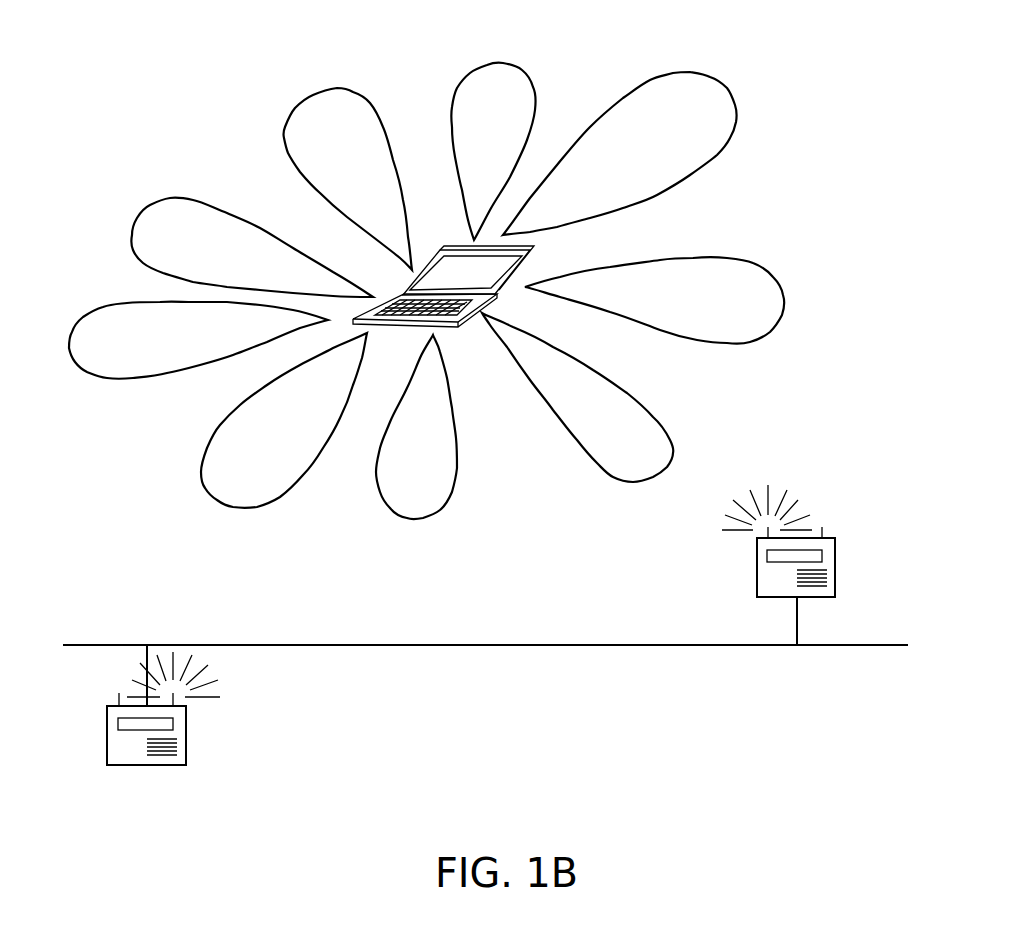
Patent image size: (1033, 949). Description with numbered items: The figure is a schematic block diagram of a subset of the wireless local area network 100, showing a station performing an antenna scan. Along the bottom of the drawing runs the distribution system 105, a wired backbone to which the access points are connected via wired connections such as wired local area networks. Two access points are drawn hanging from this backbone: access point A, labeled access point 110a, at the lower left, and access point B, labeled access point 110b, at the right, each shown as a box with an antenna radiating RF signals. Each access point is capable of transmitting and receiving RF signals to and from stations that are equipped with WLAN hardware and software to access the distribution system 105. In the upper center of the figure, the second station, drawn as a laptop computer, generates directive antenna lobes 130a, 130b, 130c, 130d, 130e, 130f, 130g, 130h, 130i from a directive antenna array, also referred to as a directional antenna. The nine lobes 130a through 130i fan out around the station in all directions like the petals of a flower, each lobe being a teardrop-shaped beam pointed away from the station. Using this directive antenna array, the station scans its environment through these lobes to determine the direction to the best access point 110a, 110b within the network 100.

The wireless local area network 100 is at (802, 84).
The distribution system 105 is at (868, 643).
The access point 110a is at (107, 742).
The access point 110b is at (837, 575).
The directive antenna lobe 130a is at (713, 343).
The directive antenna lobe 130b is at (602, 473).
The directive antenna lobe 130c is at (398, 520).
The directive antenna lobe 130d is at (220, 507).
The directive antenna lobe 130e is at (93, 378).
The directive antenna lobe 130f is at (132, 238).
The directive antenna lobe 130g is at (285, 133).
The directive antenna lobe 130h is at (513, 65).
The directive antenna lobe 130i is at (590, 128).